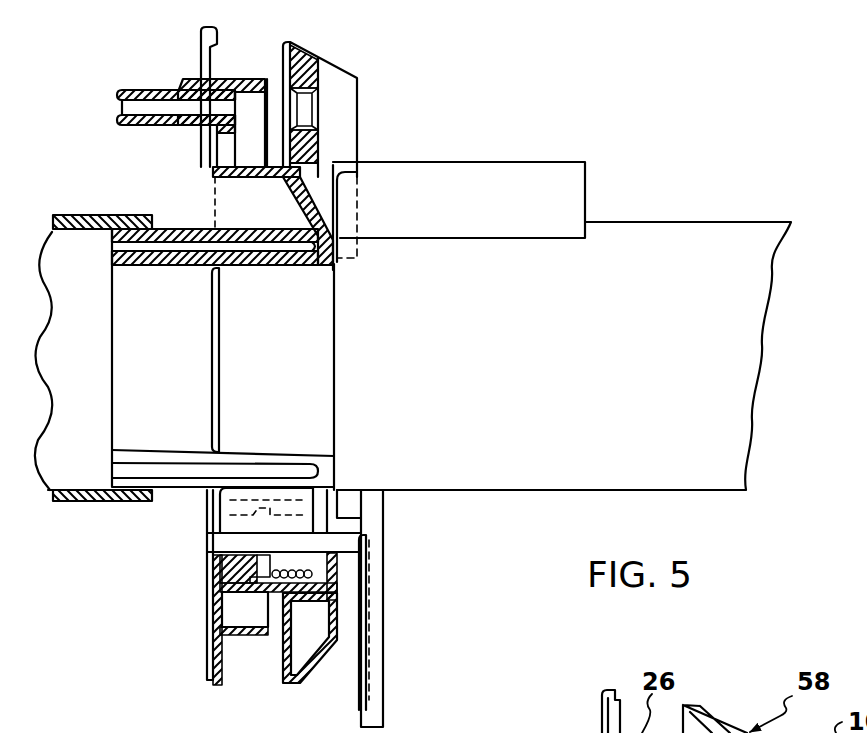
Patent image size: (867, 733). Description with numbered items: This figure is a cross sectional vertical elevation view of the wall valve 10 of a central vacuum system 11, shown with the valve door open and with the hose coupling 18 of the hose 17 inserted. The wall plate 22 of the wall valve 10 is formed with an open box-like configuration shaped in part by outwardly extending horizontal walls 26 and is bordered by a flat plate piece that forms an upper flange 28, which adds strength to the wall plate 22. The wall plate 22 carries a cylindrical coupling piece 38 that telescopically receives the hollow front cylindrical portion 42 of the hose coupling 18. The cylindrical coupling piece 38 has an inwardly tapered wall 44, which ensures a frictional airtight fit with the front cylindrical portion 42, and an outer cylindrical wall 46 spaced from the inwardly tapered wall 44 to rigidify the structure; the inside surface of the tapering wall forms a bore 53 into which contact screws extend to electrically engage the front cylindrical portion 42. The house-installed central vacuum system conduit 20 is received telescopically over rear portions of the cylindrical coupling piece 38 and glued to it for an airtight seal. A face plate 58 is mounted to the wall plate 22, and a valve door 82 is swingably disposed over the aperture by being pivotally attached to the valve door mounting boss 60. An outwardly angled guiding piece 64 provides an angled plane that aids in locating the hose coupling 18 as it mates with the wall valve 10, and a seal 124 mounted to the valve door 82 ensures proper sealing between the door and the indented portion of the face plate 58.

The wall valve 10 is at (388, 98).
The central vacuum system 11 is at (42, 238).
The hose 17 is at (770, 212).
The hose coupling 18 is at (688, 222).
The central vacuum system conduit 20 is at (100, 214).
The wall plate 22 is at (229, 80).
The horizontal walls 26 is at (255, 80).
The upper flange 28 is at (224, 620).
The cylindrical coupling piece 38 is at (182, 228).
The front cylindrical portion 42 is at (279, 368).
The inwardly tapered wall 44 is at (181, 268).
The outer cylindrical wall 46 is at (240, 229).
The bore 53 is at (303, 455).
The face plate 58 is at (331, 62).
The valve door mounting boss 60 is at (237, 563).
The outwardly angled guiding piece 64 is at (312, 190).
The valve door 82 is at (388, 630).
The seal 124 is at (362, 680).